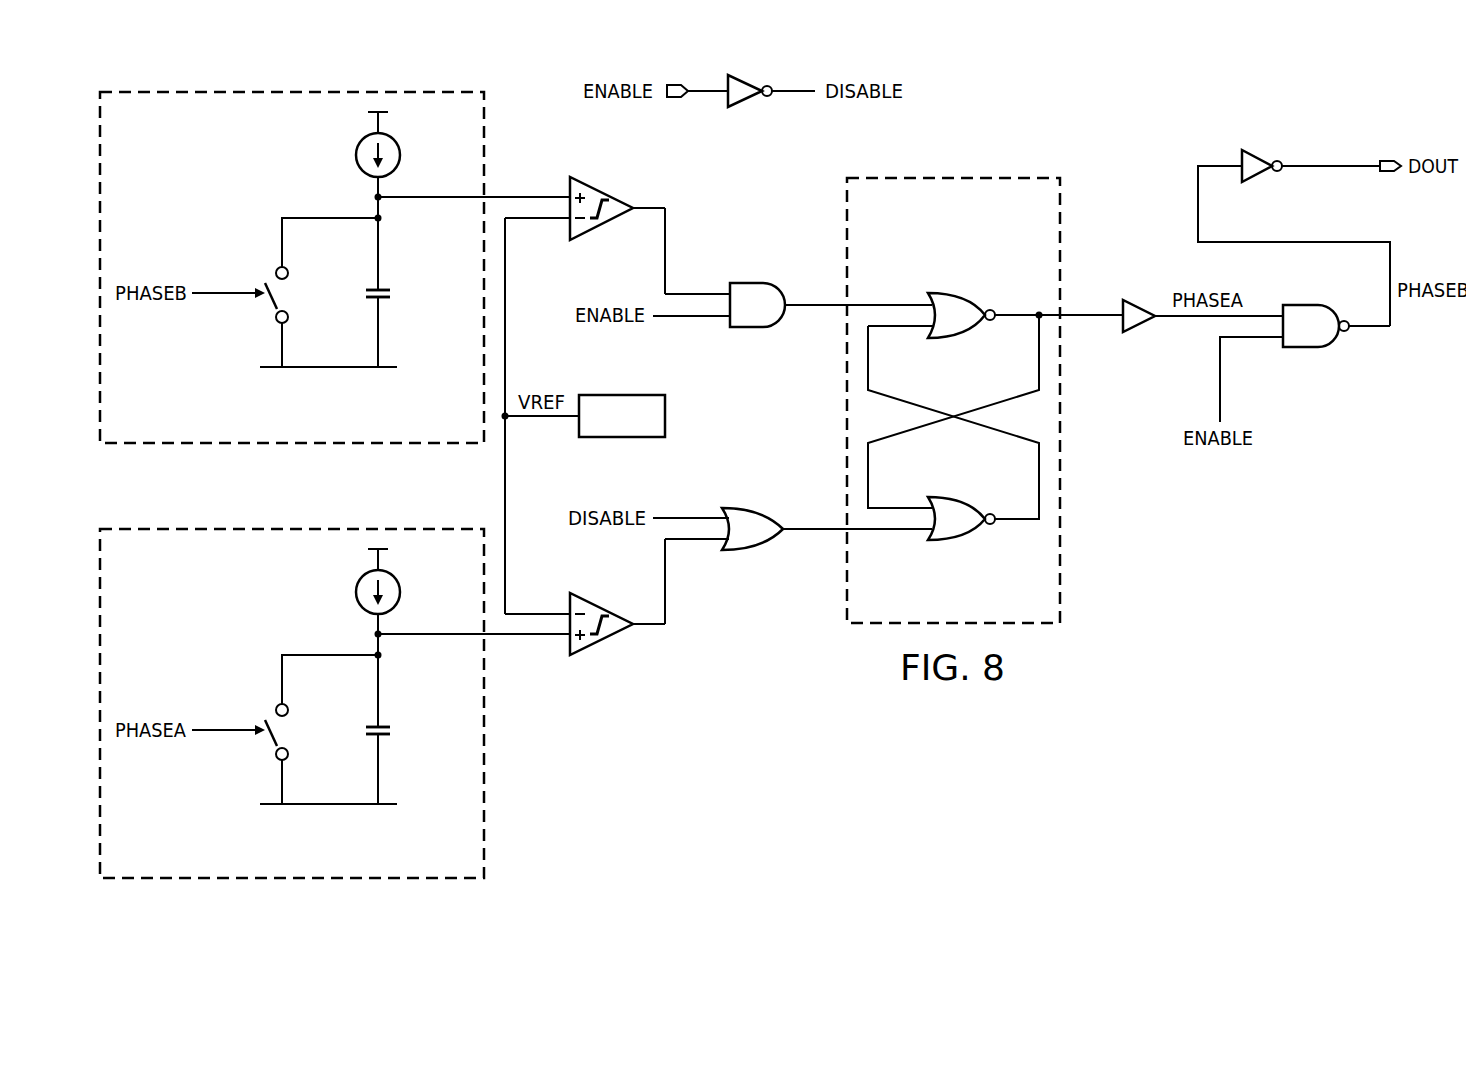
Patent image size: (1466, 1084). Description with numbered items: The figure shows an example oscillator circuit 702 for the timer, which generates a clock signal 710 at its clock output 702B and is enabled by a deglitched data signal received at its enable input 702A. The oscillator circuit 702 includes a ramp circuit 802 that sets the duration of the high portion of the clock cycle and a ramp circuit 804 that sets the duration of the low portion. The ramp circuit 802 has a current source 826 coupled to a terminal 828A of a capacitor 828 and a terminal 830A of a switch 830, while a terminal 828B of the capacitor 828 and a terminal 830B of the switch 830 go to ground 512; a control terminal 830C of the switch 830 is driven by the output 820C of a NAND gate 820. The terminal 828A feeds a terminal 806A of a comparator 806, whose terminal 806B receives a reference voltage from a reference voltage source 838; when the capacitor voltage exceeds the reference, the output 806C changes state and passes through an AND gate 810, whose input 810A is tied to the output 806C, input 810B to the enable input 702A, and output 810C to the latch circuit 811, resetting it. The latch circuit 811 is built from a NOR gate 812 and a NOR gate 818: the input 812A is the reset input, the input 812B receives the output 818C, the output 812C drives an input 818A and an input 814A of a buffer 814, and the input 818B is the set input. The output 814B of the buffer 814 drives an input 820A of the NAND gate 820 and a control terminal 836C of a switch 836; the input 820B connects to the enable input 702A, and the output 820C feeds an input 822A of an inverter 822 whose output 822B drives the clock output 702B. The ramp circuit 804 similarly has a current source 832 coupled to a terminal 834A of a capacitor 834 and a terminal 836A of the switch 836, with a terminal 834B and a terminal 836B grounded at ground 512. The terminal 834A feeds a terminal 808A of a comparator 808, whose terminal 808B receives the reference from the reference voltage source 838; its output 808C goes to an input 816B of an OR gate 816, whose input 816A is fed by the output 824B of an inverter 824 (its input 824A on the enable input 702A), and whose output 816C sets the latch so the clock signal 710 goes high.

The oscillator circuit 702 is at (1130, 70).
The enable input 702A is at (667, 83).
The clock output 702B is at (1398, 142).
The clock signal 710 is at (1330, 163).
The ramp circuit 802 is at (250, 90).
The ramp circuit 804 is at (250, 527).
The comparator 806 is at (606, 230).
The terminal 806A is at (560, 193).
The terminal 806B is at (560, 228).
The output 806C is at (657, 181).
The comparator 808 is at (606, 606).
The terminal 808A is at (560, 641).
The terminal 808B is at (560, 608).
The output 808C is at (642, 630).
The AND gate 810 is at (758, 281).
The input 810A is at (718, 290).
The input 810B is at (718, 321).
The output 810C is at (792, 310).
The latch circuit 811 is at (980, 176).
The NOR gate 812 is at (958, 290).
The input 812A is at (922, 299).
The input 812B is at (922, 332).
The output 812C is at (1005, 311).
The buffer 814 is at (1141, 300).
The input 814A is at (1115, 320).
The output 814B is at (1165, 320).
The OR gate 816 is at (757, 555).
The input 816A is at (718, 514).
The input 816B is at (718, 544).
The output 816C is at (792, 525).
The NOR gate 818 is at (961, 546).
The input 818A is at (922, 503).
The input 818B is at (922, 535).
The output 818C is at (1002, 524).
The NAND gate 820 is at (1311, 352).
The input 820A is at (1278, 312).
The input 820B is at (1278, 341).
The output 820C is at (1357, 331).
The inverter 822 is at (1259, 150).
The input 822A is at (1232, 162).
The output 822B is at (1290, 170).
The inverter 824 is at (750, 75).
The input 824A is at (718, 95).
The output 824B is at (785, 95).
The current source 826 is at (356, 160).
The capacitor 828 is at (398, 295).
The terminal 828A is at (382, 284).
The terminal 828B is at (374, 305).
The switch 830 is at (268, 306).
The terminal 830A is at (287, 267).
The terminal 830B is at (278, 330).
The control terminal 830C is at (253, 291).
The current source 832 is at (356, 597).
The capacitor 834 is at (398, 732).
The terminal 834A is at (382, 721).
The terminal 834B is at (374, 742).
The switch 836 is at (268, 743).
The terminal 836A is at (287, 704).
The terminal 836B is at (278, 767).
The control terminal 836C is at (253, 728).
The reference voltage source 838 is at (622, 393).
The ground 512 is at (328, 371).